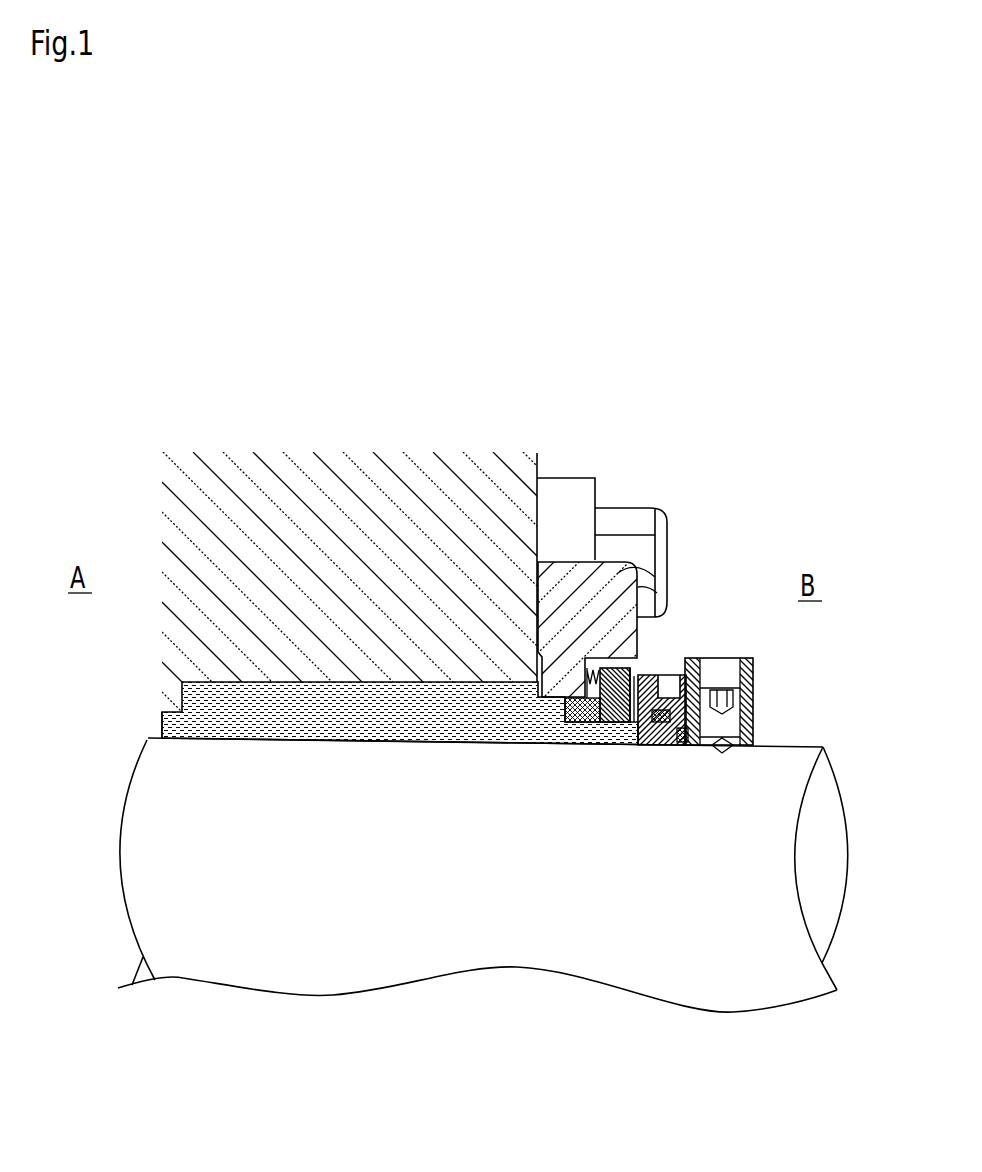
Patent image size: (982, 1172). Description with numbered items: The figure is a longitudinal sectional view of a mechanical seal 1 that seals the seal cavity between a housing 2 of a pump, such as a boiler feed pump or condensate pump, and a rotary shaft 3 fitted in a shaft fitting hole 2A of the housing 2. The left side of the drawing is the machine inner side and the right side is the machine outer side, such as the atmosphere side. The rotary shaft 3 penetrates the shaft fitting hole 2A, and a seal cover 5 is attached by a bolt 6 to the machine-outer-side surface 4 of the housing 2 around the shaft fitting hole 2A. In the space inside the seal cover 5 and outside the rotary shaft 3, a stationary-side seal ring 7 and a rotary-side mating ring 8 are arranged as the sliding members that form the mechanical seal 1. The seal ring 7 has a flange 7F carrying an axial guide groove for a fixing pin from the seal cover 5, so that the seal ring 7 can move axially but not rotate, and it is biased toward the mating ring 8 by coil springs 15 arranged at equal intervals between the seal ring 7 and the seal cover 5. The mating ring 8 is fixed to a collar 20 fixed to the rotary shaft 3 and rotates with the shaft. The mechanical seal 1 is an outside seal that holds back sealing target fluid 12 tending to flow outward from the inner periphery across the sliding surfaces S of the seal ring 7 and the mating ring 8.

The mechanical seal 1 is at (649, 757).
The housing 2 is at (330, 462).
The shaft fitting hole 2A is at (177, 741).
The rotary shaft 3 is at (782, 813).
The machine-outer-side surface 4 is at (538, 489).
The seal cover 5 is at (643, 572).
The bolt 6 is at (643, 508).
The seal ring 7 is at (594, 742).
The flange 7F is at (633, 670).
The mating ring 8 is at (572, 795).
The sealing target fluid 12 is at (362, 716).
The coil springs 15 is at (572, 724).
The collar 20 is at (754, 676).
The sliding surfaces S is at (690, 658).